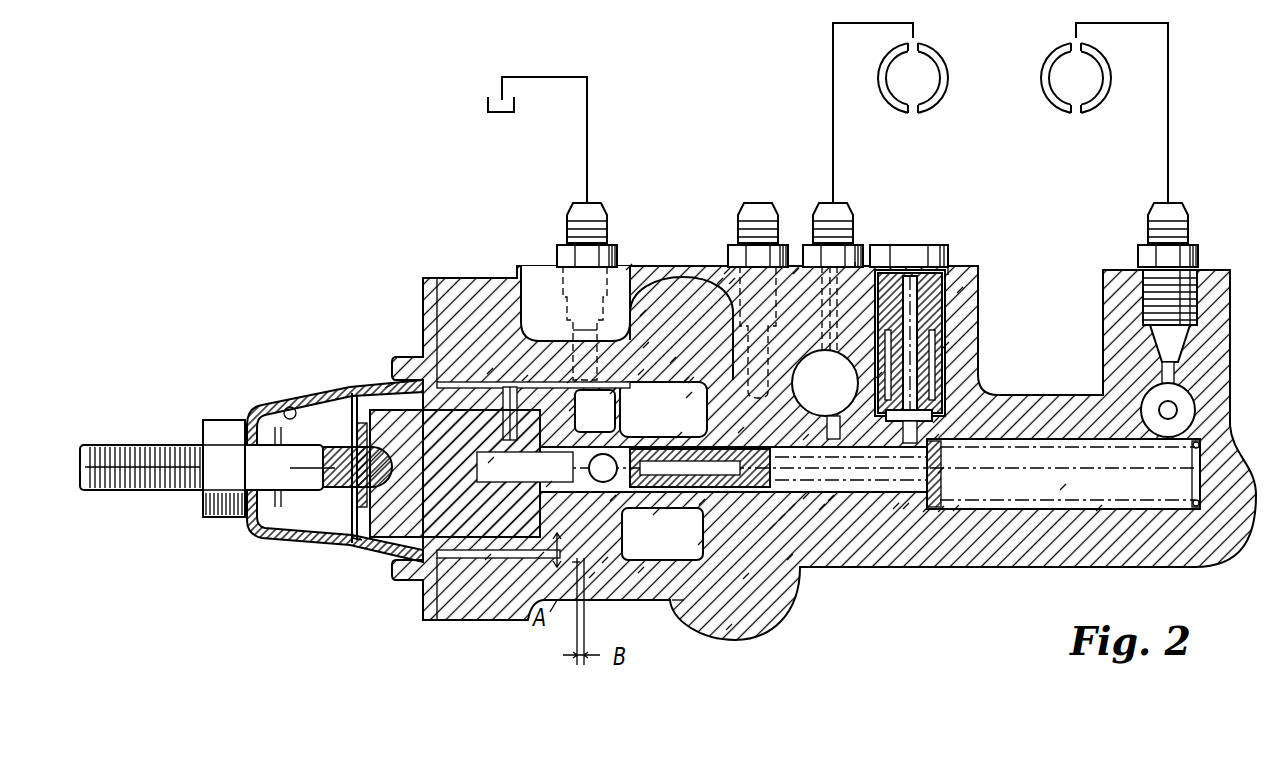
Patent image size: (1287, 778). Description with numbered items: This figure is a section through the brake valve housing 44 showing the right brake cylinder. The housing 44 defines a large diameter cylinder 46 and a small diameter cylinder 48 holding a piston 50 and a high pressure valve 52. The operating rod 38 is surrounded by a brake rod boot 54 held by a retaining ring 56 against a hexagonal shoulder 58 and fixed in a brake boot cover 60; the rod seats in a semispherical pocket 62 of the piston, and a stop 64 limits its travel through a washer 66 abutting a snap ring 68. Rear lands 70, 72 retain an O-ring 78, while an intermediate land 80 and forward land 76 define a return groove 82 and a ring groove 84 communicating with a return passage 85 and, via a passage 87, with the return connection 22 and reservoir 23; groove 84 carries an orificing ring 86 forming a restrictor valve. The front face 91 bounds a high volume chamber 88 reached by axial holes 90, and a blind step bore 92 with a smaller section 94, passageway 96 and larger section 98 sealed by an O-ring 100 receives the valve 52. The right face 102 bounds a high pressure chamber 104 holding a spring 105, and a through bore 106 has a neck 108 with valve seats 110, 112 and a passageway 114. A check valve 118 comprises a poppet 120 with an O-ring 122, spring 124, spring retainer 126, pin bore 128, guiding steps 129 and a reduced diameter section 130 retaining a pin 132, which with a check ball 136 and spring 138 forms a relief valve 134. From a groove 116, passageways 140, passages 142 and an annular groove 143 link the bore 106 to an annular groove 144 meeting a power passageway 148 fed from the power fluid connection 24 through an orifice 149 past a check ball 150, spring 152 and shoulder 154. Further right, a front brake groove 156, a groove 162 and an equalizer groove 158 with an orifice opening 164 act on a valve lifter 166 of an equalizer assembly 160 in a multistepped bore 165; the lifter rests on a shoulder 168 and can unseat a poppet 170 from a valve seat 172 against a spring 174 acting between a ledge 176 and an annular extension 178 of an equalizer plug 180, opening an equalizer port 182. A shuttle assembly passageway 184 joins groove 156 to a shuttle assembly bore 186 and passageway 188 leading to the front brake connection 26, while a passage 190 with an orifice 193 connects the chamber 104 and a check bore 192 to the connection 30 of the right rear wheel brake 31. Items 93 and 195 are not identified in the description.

The return connection 22 is at (562, 214).
The reservoir 23 is at (486, 110).
The power fluid connection 24 is at (762, 206).
The front brake connection 26 is at (842, 212).
The connection 30 is at (1192, 228).
The right rear wheel brake 31 is at (1096, 110).
The operating rod 38 is at (137, 415).
The brake valve housing 44 is at (675, 306).
The large diameter cylinder 46 is at (678, 604).
The small diameter cylinder 48 is at (1099, 509).
The piston 50 is at (540, 560).
The high pressure valve 52 is at (822, 512).
The brake rod boot 54 is at (262, 403).
The retaining ring 56 is at (288, 406).
The hexagonal shoulder 58 is at (206, 432).
The brake boot cover 60 is at (412, 353).
The semispherical pocket 62 is at (377, 503).
The stop 64 is at (350, 533).
The washer 66 is at (372, 388).
The snap ring 68 is at (390, 385).
The rear land 70 is at (456, 620).
The rear land 72 is at (488, 562).
The forward land 76 is at (605, 565).
The O-ring 78 is at (490, 371).
The intermediate land 80 is at (576, 565).
The return groove 82 is at (525, 378).
The ring groove 84 is at (570, 380).
The return passage 85 is at (547, 456).
The orificing ring 86 is at (592, 580).
The passage 87 is at (572, 336).
The high volume chamber 88 is at (629, 268).
The axial holes 90 is at (641, 373).
The front face 91 is at (646, 346).
The blind step bore 92 is at (549, 489).
The piston section 93 is at (700, 468).
The smaller diameter section 94 is at (491, 461).
The passageway 96 is at (505, 436).
The larger diameter section 98 is at (588, 497).
The O-ring 100 is at (572, 408).
The right face 102 is at (956, 509).
The high pressure chamber 104 is at (1097, 480).
The spring 105 is at (1192, 449).
The through bore 106 is at (896, 507).
The neck section 108 is at (641, 575).
The valve seat 110 is at (613, 503).
The valve seat 112 is at (689, 396).
The passageway 114 is at (686, 381).
The groove 116 is at (673, 361).
The check valve 118 is at (691, 381).
The poppet 120 is at (790, 562).
The O-ring 122 is at (701, 547).
The spring 124 is at (941, 471).
The spring retainer 126 is at (965, 447).
The pin bore 128 is at (772, 532).
The steps 129 is at (679, 436).
The reduced diameter section 130 is at (806, 501).
The pin 132 is at (702, 507).
The relief valve 134 is at (656, 517).
The check ball 136 is at (613, 396).
The spring 138 is at (490, 473).
The passageways 140 is at (746, 581).
The passages 142 is at (741, 431).
The annular groove 143 is at (729, 632).
The annular groove 144 is at (792, 512).
The power passageway 148 is at (782, 522).
The orifice 149 is at (727, 272).
The check ball 150 is at (796, 272).
The spring 152 is at (732, 282).
The shoulder 154 is at (720, 282).
The annular groove 156 is at (831, 503).
The annular groove 158 is at (926, 510).
The equalizer assembly 160 is at (950, 330).
The groove 162 is at (906, 507).
The orifice opening 164 is at (941, 510).
The multistepped bore 165 is at (960, 291).
The valve lifter 166 is at (936, 421).
The shoulder 168 is at (936, 438).
The poppet 170 is at (879, 376).
The valve seat 172 is at (935, 390).
The spring 174 is at (945, 312).
The ledge 176 is at (940, 375).
The annular extension 178 is at (955, 272).
The equalizer plug 180 is at (950, 262).
The equalizer port 182 is at (946, 346).
The shuttle assembly passageway 184 is at (888, 411).
The shuttle assembly bore 186 is at (816, 367).
The passageway 188 is at (856, 262).
The passage 190 is at (1226, 350).
The check bore 192 is at (1222, 386).
The orifice 193 is at (1196, 410).
The brake circuit 195 is at (951, 78).